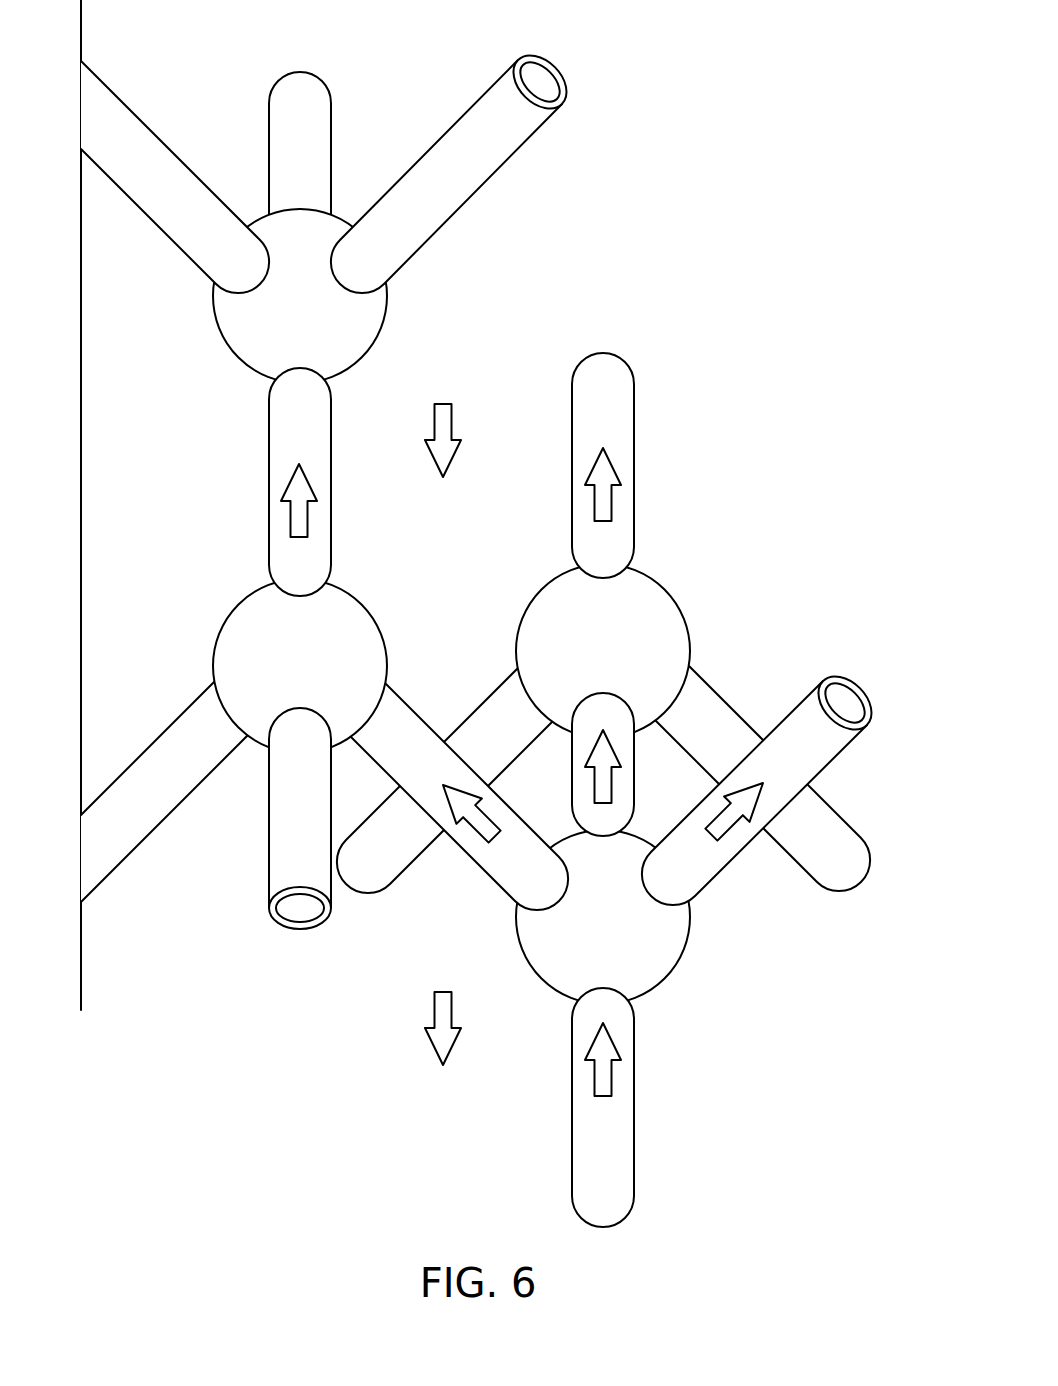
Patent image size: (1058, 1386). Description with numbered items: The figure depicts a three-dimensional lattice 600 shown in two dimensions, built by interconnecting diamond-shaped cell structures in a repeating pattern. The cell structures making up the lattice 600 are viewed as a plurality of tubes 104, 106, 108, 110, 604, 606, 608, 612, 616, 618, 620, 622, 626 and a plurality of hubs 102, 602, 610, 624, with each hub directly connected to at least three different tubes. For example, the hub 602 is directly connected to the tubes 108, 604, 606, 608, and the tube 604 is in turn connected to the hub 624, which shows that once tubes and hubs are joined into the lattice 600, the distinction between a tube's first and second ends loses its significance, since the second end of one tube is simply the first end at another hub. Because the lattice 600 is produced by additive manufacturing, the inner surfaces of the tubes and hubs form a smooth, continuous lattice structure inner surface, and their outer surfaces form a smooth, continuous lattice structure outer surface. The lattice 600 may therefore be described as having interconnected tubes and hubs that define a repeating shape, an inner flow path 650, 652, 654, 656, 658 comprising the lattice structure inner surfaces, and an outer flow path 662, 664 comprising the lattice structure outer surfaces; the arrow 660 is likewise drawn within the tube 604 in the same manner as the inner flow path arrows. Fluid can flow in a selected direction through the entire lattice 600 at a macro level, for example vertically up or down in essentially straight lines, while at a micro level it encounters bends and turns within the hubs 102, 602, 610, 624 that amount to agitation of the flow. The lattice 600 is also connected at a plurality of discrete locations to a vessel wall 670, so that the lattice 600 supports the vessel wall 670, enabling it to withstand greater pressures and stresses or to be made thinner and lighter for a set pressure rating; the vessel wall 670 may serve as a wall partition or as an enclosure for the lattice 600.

The lattice 600 is at (666, 94).
The hub 102 is at (226, 344).
The tube 104 is at (331, 130).
The tube 106 is at (491, 90).
The tube 108 is at (331, 442).
The tube 110 is at (162, 140).
The hub 602 is at (367, 610).
The tube 604 is at (500, 886).
The tube 606 is at (269, 848).
The tube 608 is at (155, 741).
The hub 610 is at (674, 601).
The tube 612 is at (635, 404).
The tube 616 is at (731, 708).
The tube 618 is at (634, 800).
The tube 620 is at (478, 707).
The tube 622 is at (843, 748).
The hub 624 is at (680, 958).
The tube 626 is at (634, 1128).
The inner flow path 650 is at (594, 1080).
The inner flow path 652 is at (612, 505).
The inner flow path 654 is at (290, 520).
The inner flow path 656 is at (723, 836).
The inner flow path 658 is at (594, 784).
The flow direction arrow 660 is at (483, 836).
The outer flow path 662 is at (444, 405).
The outer flow path 664 is at (435, 1008).
The vessel wall 670 is at (81, 30).